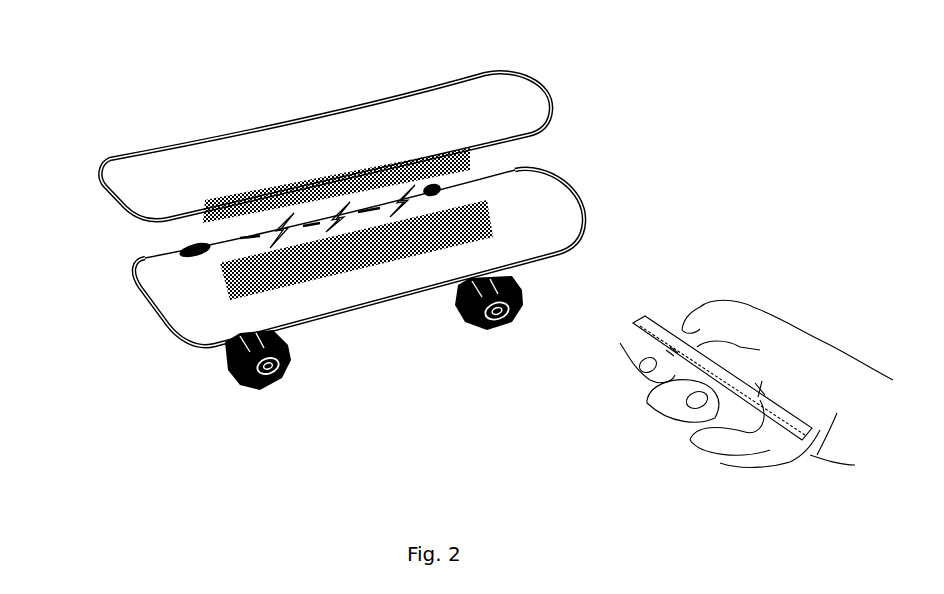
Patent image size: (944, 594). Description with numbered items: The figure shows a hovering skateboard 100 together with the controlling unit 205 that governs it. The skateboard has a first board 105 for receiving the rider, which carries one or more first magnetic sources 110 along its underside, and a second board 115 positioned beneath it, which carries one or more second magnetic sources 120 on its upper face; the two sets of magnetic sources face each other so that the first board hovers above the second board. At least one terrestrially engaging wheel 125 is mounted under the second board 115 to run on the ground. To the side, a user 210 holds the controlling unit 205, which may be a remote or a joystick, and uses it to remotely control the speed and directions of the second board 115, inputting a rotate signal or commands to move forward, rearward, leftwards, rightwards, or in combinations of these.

The hovering skateboard 100 is at (93, 122).
The first board 105 is at (545, 86).
The first magnetic sources 110 is at (503, 160).
The second board 115 is at (580, 198).
The second magnetic sources 120 is at (403, 257).
The terrestrially engaging wheel 125 is at (223, 352).
The controlling unit 205 is at (660, 330).
The user 210 is at (795, 330).